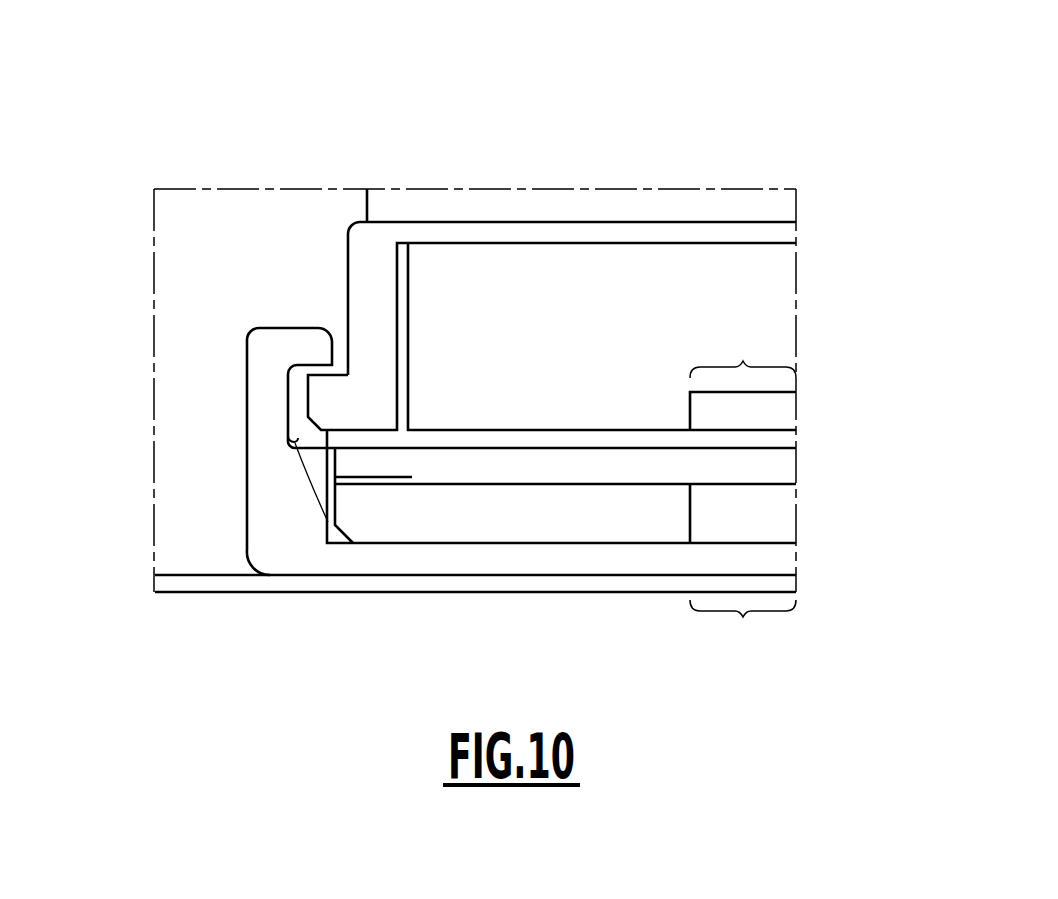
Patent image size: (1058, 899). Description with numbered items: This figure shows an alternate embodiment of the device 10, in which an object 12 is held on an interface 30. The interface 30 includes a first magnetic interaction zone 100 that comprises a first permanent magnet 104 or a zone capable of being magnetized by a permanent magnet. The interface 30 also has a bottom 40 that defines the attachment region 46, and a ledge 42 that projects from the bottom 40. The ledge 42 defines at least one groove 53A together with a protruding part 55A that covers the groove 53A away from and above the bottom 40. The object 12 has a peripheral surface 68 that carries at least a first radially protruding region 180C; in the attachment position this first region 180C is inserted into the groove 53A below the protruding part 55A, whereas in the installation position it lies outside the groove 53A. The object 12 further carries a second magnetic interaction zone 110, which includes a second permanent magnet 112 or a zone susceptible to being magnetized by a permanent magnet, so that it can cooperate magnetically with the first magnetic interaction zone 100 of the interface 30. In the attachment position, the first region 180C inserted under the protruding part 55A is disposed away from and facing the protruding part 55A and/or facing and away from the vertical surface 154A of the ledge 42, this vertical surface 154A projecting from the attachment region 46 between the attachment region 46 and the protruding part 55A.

The device 10 is at (826, 144).
The object 12 is at (800, 301).
The interface 30 is at (138, 374).
The bottom 40 is at (800, 465).
The ledge 42 is at (256, 407).
The attachment region 46 is at (763, 450).
The groove 53A is at (295, 395).
The protruding part 55A is at (305, 348).
The peripheral surface 68 is at (287, 410).
The first magnetic interaction zone 100 is at (475, 617).
The first permanent magnet 104 is at (800, 510).
The second magnetic interaction zone 110 is at (743, 351).
The second permanent magnet 112 is at (763, 405).
The vertical surface 154A is at (298, 447).
The first radially protruding region 180C is at (327, 455).